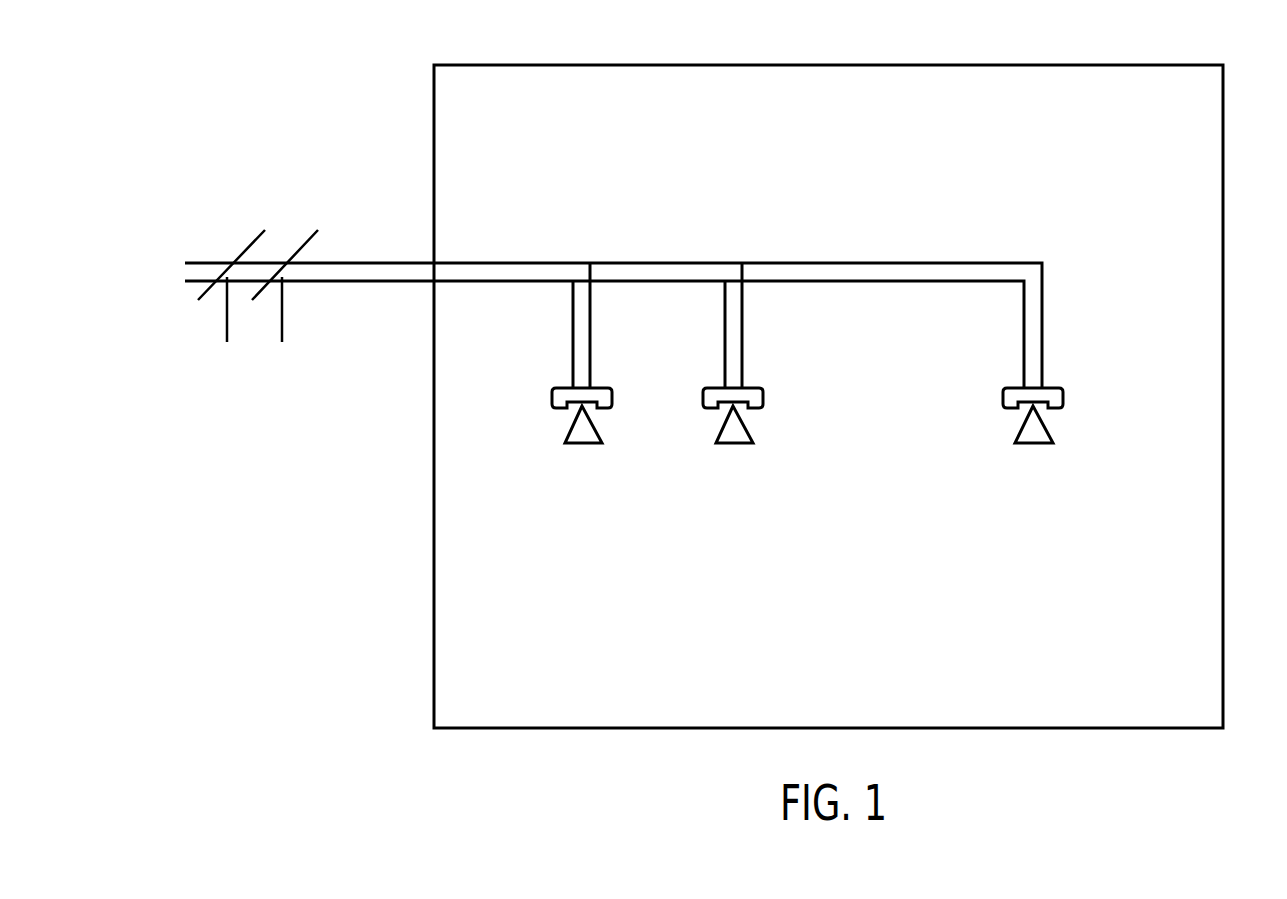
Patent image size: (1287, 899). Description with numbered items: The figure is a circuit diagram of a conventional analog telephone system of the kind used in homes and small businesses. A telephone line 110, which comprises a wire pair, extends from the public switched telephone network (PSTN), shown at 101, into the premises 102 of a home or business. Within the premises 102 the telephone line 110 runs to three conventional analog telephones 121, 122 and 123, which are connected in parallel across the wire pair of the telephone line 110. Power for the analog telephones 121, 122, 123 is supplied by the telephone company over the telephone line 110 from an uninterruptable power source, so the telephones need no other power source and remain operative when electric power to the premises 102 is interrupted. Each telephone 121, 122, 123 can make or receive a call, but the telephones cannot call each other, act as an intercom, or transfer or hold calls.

The telephone network (PSTN) line 101 is at (405, 282).
The premises 102 is at (978, 64).
The telephone line 110 is at (895, 262).
The analog telephone 121 is at (583, 445).
The analog telephone 122 is at (734, 445).
The analog telephone 123 is at (1034, 445).